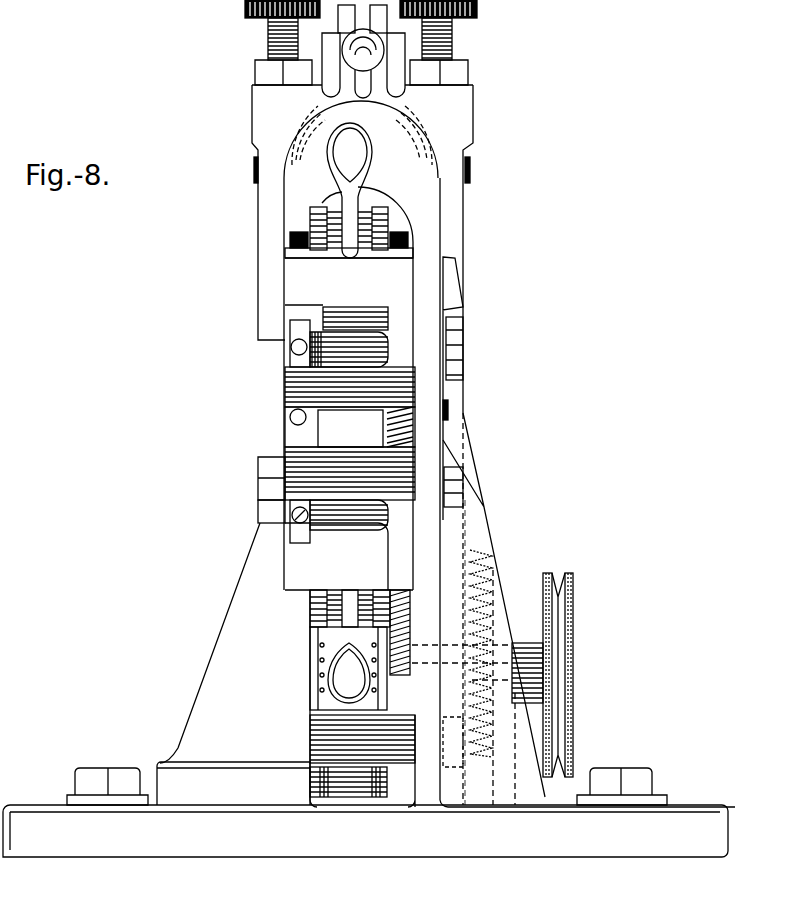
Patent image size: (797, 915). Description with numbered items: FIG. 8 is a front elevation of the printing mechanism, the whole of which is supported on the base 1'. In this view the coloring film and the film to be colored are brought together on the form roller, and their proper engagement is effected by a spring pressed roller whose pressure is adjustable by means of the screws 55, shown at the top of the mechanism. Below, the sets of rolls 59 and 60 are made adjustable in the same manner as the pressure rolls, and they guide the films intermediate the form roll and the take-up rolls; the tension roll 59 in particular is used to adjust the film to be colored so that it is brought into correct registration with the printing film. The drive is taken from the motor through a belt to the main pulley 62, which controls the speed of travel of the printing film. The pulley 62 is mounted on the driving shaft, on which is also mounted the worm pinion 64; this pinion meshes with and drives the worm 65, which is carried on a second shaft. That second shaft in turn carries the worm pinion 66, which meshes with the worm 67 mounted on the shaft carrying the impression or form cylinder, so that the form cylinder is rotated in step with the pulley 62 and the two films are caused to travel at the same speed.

The screws 55 is at (268, 37).
The set of rolls 59 is at (343, 350).
The set of rolls 60 is at (345, 520).
The worm 67 is at (408, 610).
The worm 65 is at (488, 585).
The worm pinion 64 is at (472, 679).
The main pulley 62 is at (563, 703).
The worm pinion 66 is at (402, 660).
The base 1' is at (365, 853).